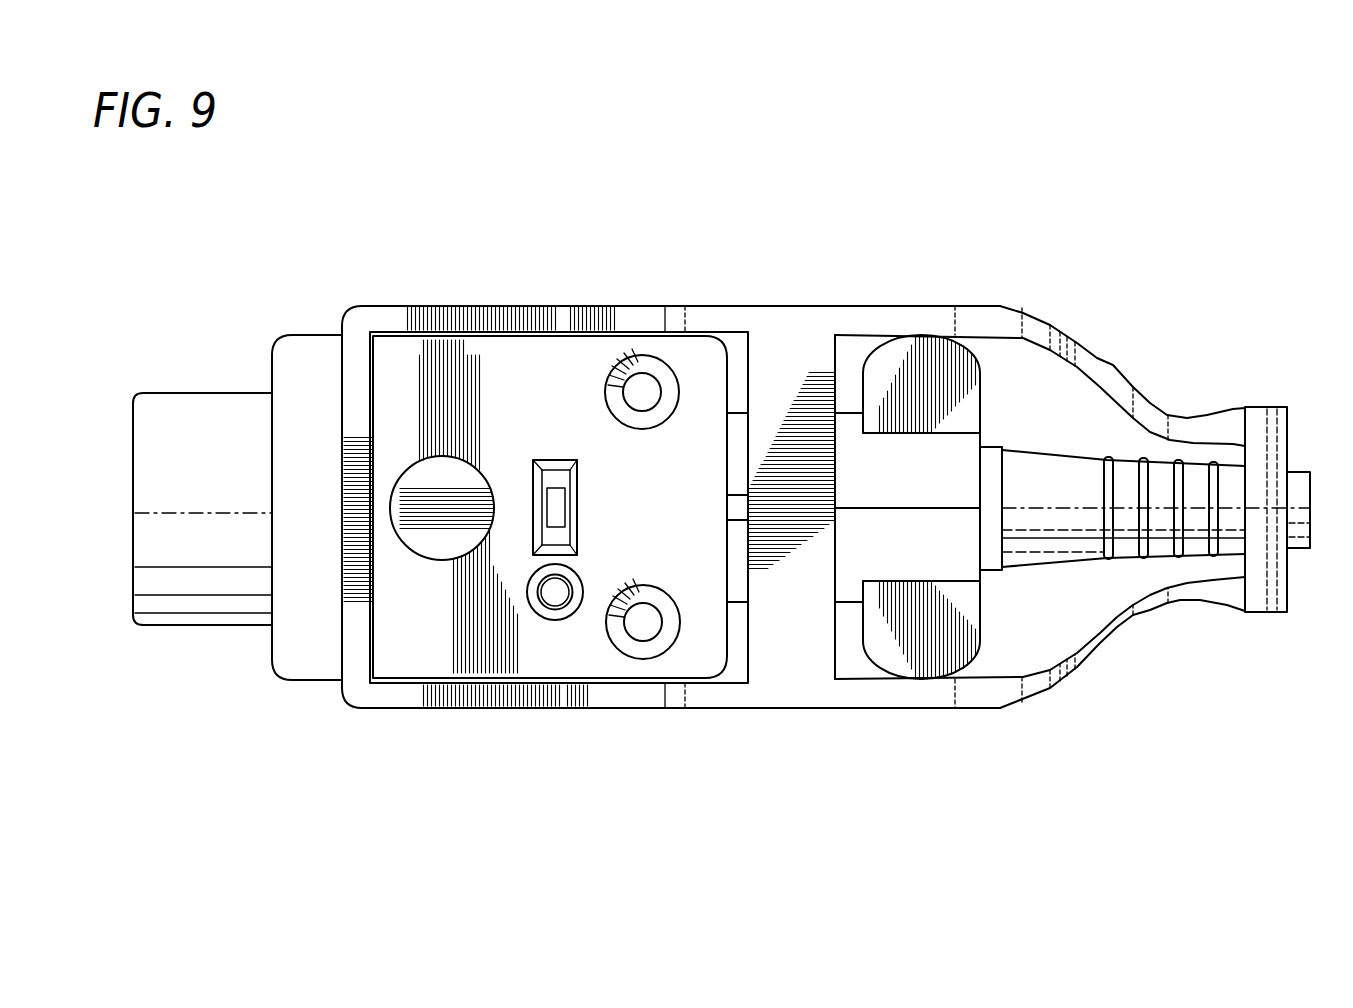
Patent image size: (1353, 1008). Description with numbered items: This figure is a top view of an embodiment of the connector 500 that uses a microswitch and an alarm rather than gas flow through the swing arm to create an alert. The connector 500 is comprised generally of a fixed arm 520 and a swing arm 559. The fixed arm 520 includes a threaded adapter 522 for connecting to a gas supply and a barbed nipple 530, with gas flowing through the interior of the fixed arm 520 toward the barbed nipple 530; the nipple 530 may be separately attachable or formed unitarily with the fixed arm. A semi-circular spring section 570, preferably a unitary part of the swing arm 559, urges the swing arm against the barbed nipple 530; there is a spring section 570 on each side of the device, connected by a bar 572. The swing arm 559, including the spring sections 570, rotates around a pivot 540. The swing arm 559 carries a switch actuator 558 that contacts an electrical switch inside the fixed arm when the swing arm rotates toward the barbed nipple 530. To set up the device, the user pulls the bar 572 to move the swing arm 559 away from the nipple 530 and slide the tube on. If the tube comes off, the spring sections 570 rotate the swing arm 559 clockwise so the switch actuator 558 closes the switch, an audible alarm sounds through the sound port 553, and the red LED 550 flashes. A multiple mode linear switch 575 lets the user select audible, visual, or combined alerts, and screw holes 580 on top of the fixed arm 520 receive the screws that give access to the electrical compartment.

The connector 500 is at (1048, 163).
The fixed arm 520 is at (310, 375).
The threaded adapter 522 is at (197, 592).
The barbed nipple 530 is at (1163, 522).
The pivot 540 is at (700, 708).
The red LED 550 is at (555, 592).
The sound port 553 is at (442, 515).
The switch actuator 558 is at (737, 495).
The swing arm 559 is at (1113, 362).
The semi-circular spring section 570 is at (457, 306).
The bar 572 is at (338, 372).
The multiple mode linear switch 575 is at (552, 503).
The screw holes 580 is at (642, 392).